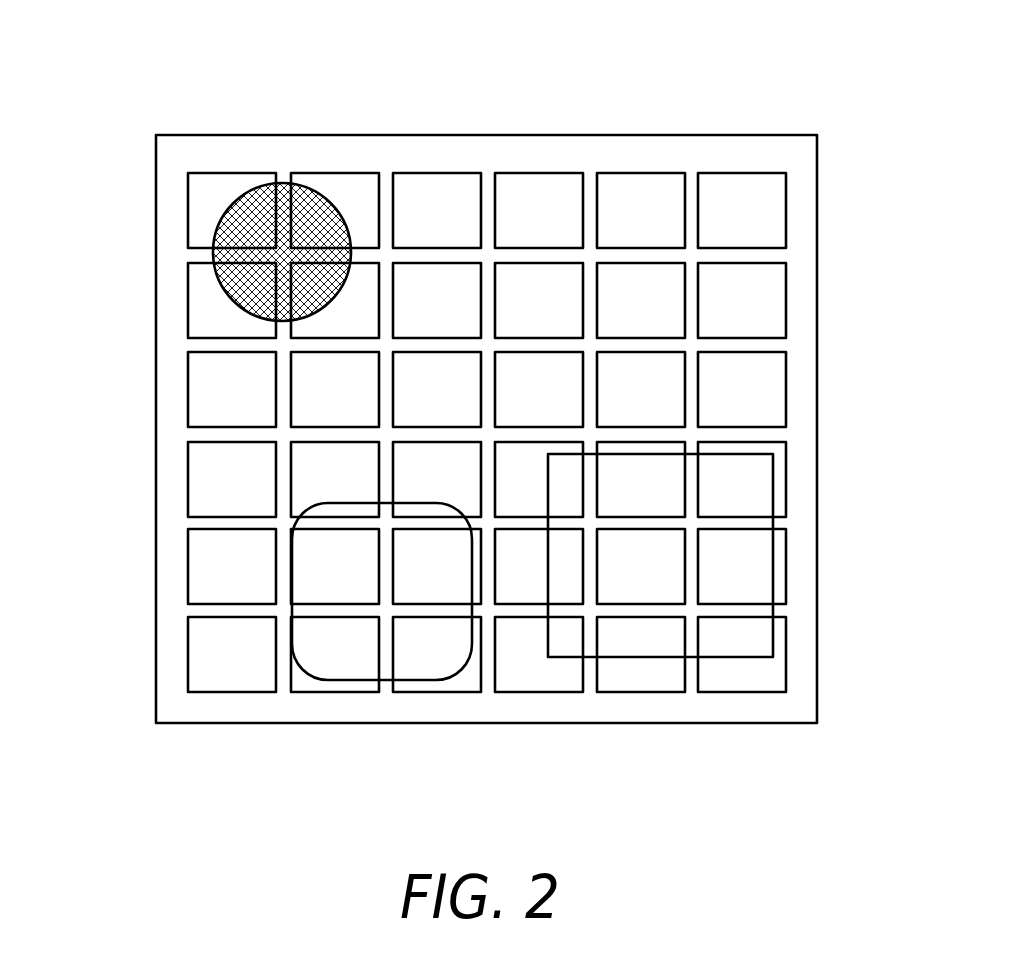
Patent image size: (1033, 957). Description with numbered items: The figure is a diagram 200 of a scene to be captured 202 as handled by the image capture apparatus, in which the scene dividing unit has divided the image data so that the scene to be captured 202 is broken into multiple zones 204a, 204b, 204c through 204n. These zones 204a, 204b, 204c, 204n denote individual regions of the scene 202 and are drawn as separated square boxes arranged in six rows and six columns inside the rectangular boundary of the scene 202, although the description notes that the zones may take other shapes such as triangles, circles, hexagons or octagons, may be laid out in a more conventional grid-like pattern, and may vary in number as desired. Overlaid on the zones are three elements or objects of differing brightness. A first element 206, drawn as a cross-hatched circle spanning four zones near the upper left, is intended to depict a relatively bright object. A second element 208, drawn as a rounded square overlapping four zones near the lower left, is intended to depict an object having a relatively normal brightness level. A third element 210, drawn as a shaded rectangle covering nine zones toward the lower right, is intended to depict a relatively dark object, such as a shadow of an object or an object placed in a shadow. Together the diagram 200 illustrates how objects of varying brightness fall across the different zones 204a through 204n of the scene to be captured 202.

The diagram 200 is at (505, 31).
The scene to be captured 202 is at (650, 135).
The zone 204a is at (188, 210).
The zone 204b is at (188, 300).
The zone 204c is at (188, 390).
The zone 204n is at (786, 654).
The first element 206 is at (337, 199).
The second element 208 is at (297, 672).
The third element 210 is at (773, 555).